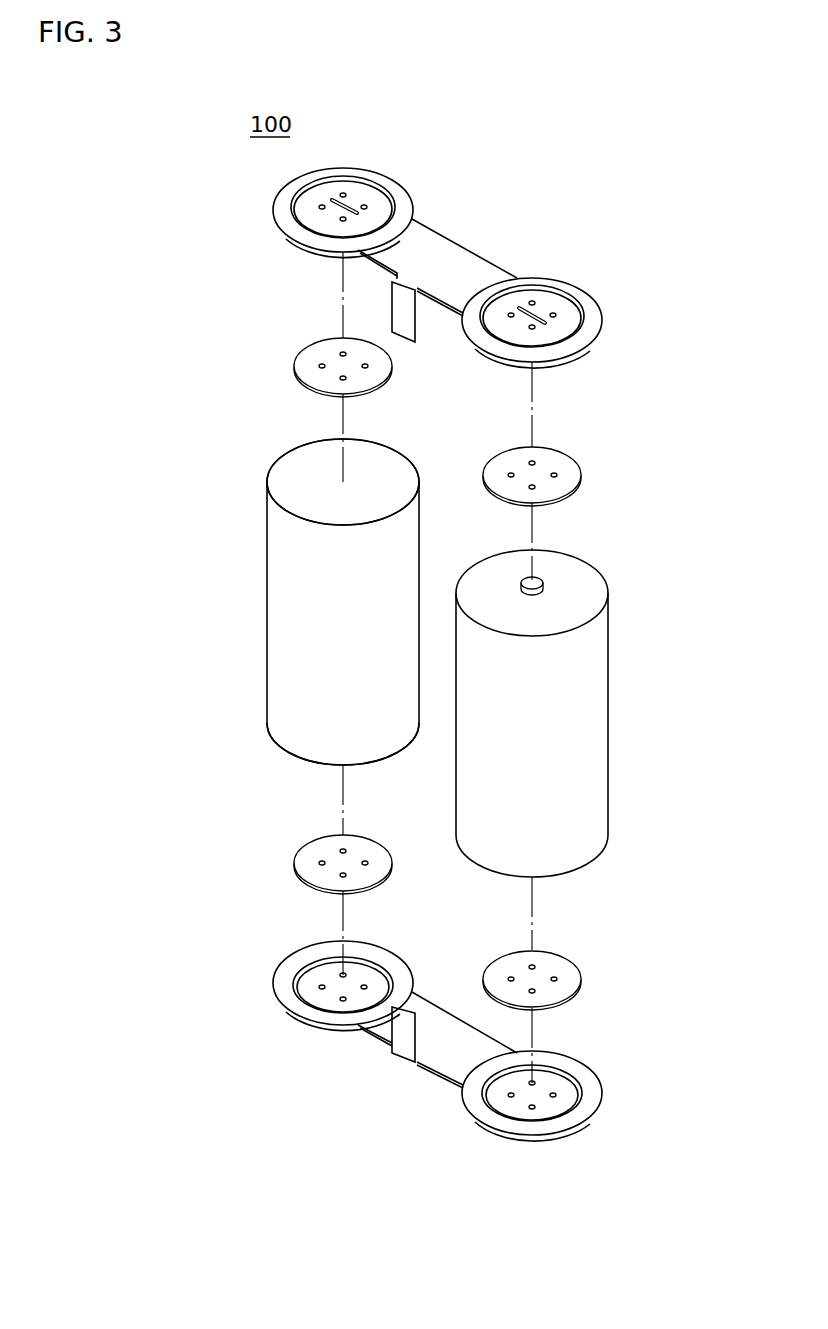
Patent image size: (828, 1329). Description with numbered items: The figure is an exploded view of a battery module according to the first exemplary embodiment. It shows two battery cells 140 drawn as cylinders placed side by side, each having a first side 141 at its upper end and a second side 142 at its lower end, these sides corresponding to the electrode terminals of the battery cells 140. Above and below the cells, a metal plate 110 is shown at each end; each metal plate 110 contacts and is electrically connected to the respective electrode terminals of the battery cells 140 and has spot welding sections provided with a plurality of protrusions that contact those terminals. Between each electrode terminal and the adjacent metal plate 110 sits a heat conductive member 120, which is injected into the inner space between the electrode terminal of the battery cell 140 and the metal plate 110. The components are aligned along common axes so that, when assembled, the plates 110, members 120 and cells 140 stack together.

The metal plate 110 is at (445, 247).
The heat conductive member 120 is at (308, 374).
The battery cell 140 is at (287, 598).
The first side 141 is at (297, 460).
The second side 142 is at (315, 755).